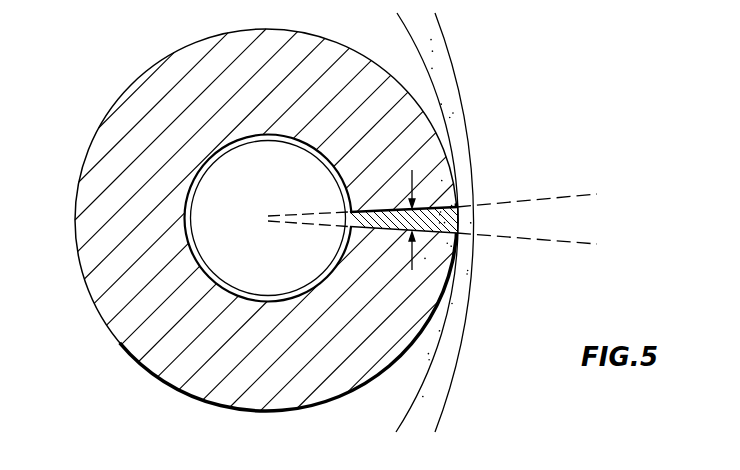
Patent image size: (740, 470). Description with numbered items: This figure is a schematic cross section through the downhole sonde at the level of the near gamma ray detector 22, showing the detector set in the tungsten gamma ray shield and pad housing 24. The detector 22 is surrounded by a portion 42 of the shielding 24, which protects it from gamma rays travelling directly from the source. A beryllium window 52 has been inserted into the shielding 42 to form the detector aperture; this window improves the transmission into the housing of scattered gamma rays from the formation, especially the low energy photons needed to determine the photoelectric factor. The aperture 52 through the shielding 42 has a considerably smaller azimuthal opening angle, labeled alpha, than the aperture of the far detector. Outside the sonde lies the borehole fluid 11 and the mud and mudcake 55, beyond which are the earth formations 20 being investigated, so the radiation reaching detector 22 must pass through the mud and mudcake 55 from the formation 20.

The gamma ray shield and pad housing 24 is at (113, 101).
The portion of shielding 42 is at (92, 191).
The borehole fluid 11 is at (76, 347).
The near gamma ray detector 22 is at (278, 190).
The beryllium window 52 is at (447, 220).
The earth formations 20 is at (508, 342).
The mud and mudcake 55 is at (430, 397).